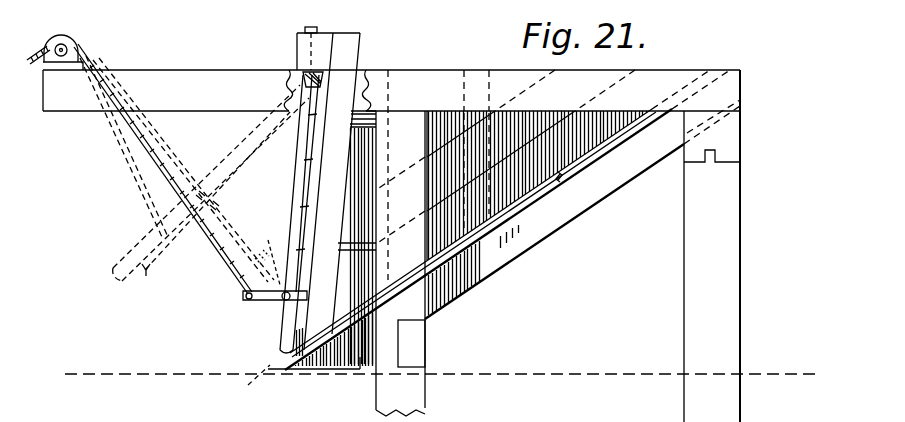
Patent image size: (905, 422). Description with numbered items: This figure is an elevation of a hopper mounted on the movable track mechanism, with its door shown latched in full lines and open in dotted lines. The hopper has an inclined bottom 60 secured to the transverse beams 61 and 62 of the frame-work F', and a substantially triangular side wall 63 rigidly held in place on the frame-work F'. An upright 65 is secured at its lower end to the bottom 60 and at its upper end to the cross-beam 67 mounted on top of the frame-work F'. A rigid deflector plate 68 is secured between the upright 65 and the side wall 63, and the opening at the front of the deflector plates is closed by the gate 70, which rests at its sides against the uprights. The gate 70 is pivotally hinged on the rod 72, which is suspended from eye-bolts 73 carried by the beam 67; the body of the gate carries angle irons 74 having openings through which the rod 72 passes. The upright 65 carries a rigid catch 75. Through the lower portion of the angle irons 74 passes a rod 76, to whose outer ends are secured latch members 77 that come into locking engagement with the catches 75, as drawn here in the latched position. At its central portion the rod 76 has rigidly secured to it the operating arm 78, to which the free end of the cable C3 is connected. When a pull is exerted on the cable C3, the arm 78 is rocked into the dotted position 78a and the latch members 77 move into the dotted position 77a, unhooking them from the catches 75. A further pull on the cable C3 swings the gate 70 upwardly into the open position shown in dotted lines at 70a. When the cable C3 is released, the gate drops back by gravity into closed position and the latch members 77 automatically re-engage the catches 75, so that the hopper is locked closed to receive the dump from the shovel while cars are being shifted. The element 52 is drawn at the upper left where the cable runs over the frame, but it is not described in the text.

The pulley 52 is at (80, 40).
The eye-bolt 73 is at (305, 40).
The cross-beam 67 is at (297, 52).
The rod 72 is at (303, 78).
The upright 65 is at (350, 82).
The deflector plate 68 is at (354, 167).
The gate 70 is at (313, 170).
The angle iron 74 is at (298, 181).
The operating arm dotted position 78a is at (265, 254).
The cable C3 is at (240, 255).
The gate open position 70a is at (194, 182).
The operating arm 78 is at (246, 300).
The rod 76 is at (283, 299).
The latch member 77 is at (298, 317).
The latch member dotted position 77a is at (264, 386).
The catch 75 is at (325, 282).
The transverse beam 61 is at (417, 352).
The inclined bottom 60 is at (533, 190).
The side wall 63 is at (570, 142).
The transverse beam 62 is at (730, 137).
The frame-work F' is at (430, 246).